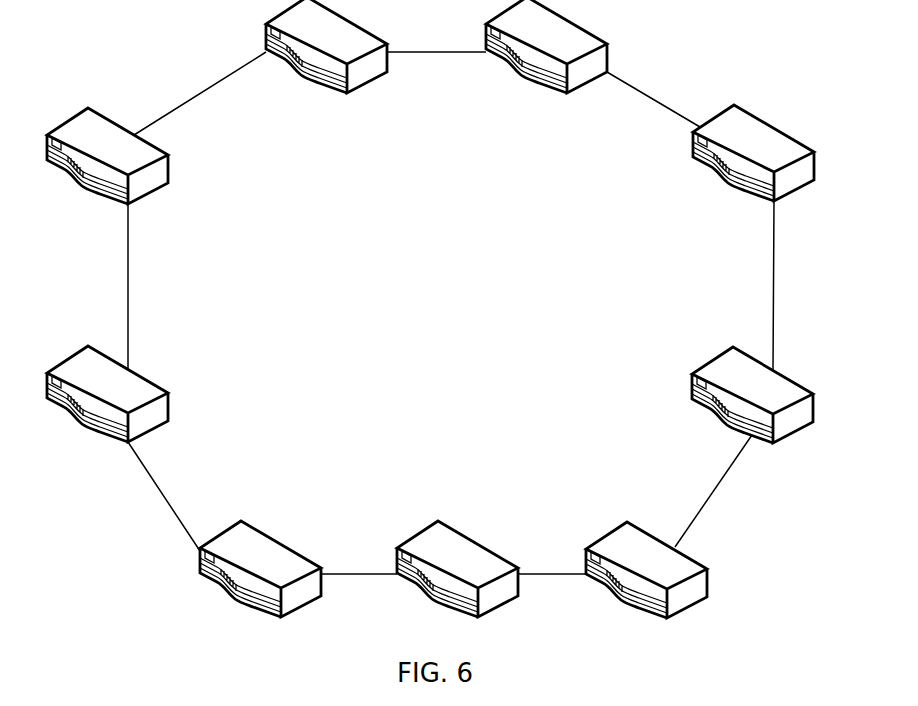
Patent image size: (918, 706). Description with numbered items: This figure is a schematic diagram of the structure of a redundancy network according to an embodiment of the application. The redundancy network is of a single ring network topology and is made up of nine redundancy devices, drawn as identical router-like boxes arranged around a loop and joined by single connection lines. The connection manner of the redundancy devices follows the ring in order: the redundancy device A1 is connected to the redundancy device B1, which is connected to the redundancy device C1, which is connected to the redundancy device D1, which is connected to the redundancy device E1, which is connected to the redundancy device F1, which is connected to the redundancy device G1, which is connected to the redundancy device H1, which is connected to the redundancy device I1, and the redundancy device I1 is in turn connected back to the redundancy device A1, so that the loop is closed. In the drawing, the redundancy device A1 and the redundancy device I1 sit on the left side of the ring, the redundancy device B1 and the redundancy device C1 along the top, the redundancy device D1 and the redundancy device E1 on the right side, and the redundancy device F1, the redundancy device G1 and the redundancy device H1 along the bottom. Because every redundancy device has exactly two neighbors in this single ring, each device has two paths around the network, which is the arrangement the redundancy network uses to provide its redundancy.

The redundancy device A1 is at (107, 156).
The redundancy device B1 is at (326, 46).
The redundancy device C1 is at (546, 46).
The redundancy device D1 is at (753, 153).
The redundancy device E1 is at (752, 395).
The redundancy device F1 is at (646, 570).
The redundancy device G1 is at (457, 569).
The redundancy device H1 is at (260, 569).
The redundancy device I1 is at (107, 394).